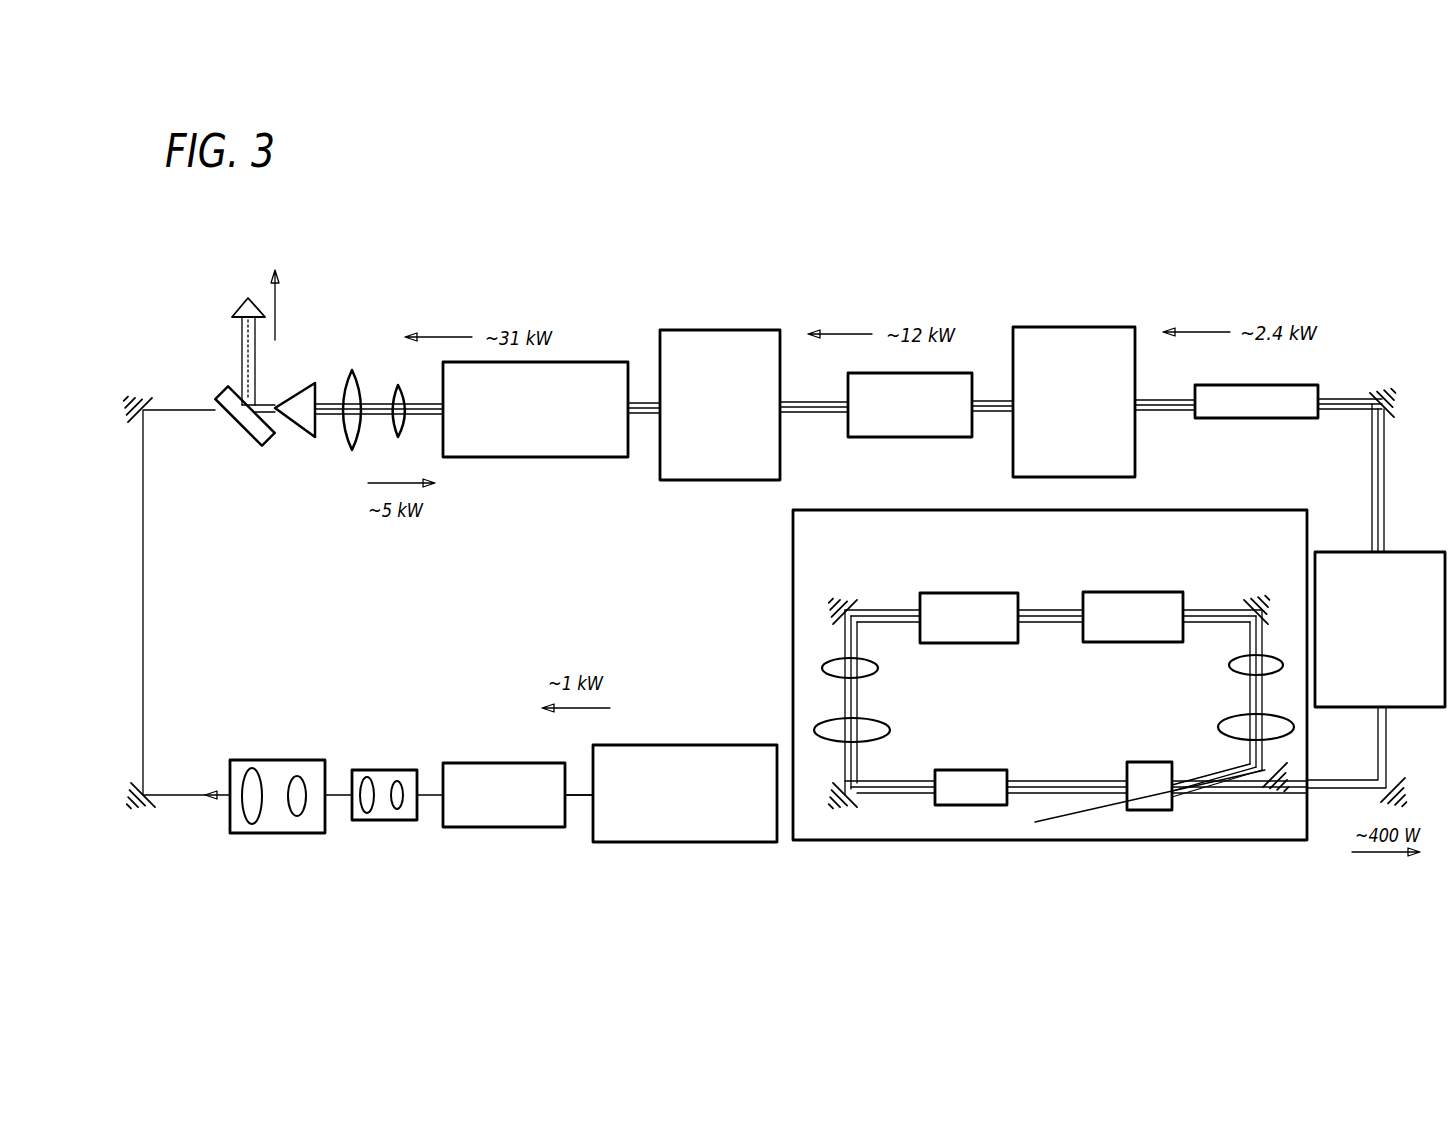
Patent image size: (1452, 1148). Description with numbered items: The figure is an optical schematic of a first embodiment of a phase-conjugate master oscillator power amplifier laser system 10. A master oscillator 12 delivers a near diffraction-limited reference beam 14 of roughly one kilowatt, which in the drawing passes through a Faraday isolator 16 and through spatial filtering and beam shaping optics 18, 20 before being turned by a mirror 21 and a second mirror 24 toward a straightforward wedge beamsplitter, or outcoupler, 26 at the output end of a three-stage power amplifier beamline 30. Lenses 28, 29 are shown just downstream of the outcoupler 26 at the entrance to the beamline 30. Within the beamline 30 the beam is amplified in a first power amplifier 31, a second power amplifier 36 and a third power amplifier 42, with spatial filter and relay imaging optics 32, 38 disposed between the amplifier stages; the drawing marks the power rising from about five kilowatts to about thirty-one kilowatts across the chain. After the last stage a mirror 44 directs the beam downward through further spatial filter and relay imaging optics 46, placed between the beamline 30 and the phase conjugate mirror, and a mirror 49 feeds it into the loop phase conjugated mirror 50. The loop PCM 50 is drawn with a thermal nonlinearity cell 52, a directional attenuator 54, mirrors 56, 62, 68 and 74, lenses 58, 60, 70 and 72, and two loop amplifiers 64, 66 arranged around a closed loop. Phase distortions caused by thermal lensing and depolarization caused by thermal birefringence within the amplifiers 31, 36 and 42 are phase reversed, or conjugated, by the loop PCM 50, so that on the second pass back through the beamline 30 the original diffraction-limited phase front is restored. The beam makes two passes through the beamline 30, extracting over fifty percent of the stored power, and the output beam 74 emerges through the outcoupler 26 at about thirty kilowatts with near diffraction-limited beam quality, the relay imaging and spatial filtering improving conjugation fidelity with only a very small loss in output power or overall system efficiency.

The system 10 is at (1158, 178).
The master oscillator 12 is at (672, 842).
The reference beam 14 is at (585, 797).
The Faraday isolator 16 is at (525, 827).
The spatial filtering beam shaping optics 18 is at (385, 820).
The spatial filtering beam shaping optics 20 is at (282, 833).
The mirror 21 is at (150, 810).
The mirror 24 is at (132, 398).
The wedge beamsplitter (outcoupler) 26 is at (225, 396).
The lens 28 is at (360, 375).
The lens 29 is at (402, 440).
The power amplifier beamline 30 is at (435, 290).
The power amplifier 31 is at (540, 457).
The relay imaging optics 32 is at (692, 482).
The power amplifier 36 is at (915, 437).
The relay imaging optics 38 is at (1138, 450).
The power amplifier 42 is at (1255, 418).
The mirror 44 is at (1390, 396).
The relay imaging optics 46 is at (1345, 552).
The mirror 49 is at (1406, 775).
The loop PCM 50 is at (1082, 840).
The thermal nonlinearity cell 52 is at (1160, 810).
The directional attenuator 54 is at (980, 805).
The mirror 56 is at (860, 818).
The lens 58 is at (815, 730).
The lens 60 is at (822, 667).
The mirror 62 is at (835, 606).
The amplifier 64 is at (966, 593).
The amplifier 66 is at (1185, 598).
The mirror 68 is at (1268, 602).
The lens 70 is at (1228, 665).
The lens 72 is at (1292, 727).
The output beam 74 is at (257, 357).